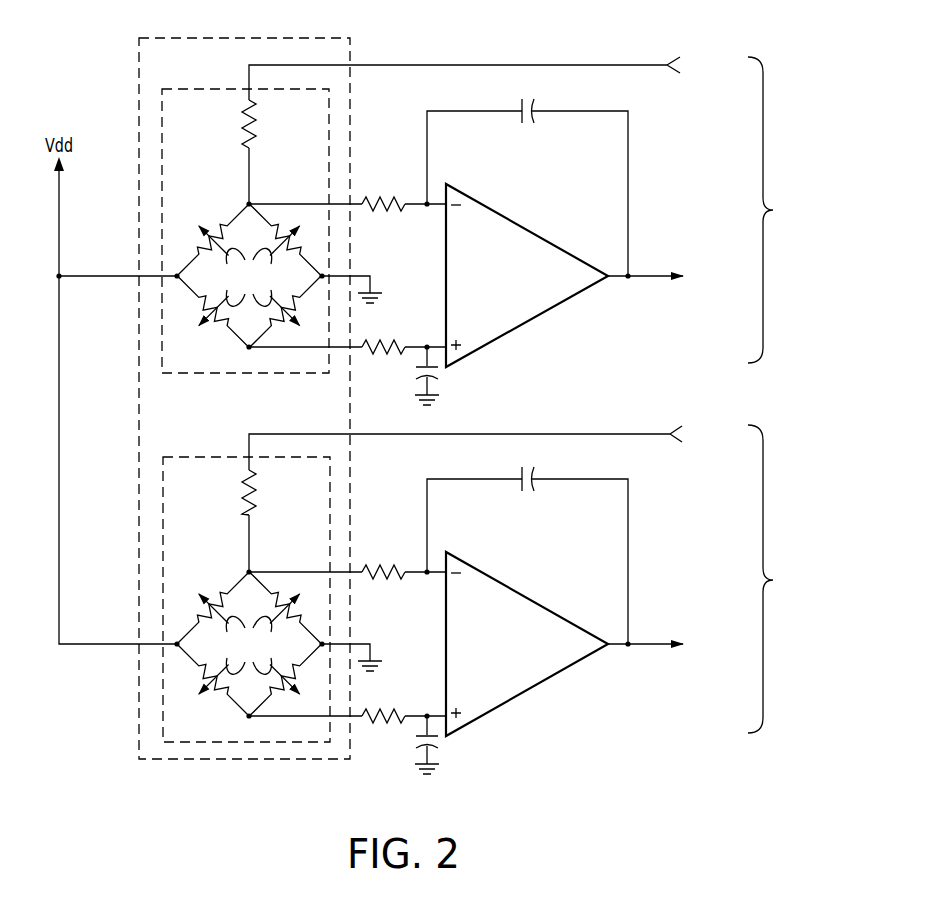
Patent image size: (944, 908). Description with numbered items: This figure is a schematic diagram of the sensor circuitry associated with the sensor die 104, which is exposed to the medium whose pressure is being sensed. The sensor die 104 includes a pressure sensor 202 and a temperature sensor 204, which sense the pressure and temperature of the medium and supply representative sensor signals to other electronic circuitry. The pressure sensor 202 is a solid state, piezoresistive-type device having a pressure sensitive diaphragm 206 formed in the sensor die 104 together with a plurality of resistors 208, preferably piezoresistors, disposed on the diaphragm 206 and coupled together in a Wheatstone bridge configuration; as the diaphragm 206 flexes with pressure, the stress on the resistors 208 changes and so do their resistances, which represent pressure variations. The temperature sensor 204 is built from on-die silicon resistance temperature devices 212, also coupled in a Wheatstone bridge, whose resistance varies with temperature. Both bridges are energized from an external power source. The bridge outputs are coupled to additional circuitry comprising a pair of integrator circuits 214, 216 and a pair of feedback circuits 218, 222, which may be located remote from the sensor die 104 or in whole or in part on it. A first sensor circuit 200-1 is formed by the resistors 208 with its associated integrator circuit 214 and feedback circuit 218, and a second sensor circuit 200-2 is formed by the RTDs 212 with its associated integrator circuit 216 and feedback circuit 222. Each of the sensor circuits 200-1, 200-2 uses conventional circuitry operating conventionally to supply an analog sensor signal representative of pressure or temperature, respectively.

The sensor die 104 is at (139, 38).
The pressure sensor 202 is at (186, 240).
The temperature sensor 204 is at (188, 679).
The pressure sensitive diaphragm 206 is at (230, 195).
The resistors 208 is at (249, 277).
The resistance temperature devices 212 is at (249, 645).
The integrator circuit 214 is at (642, 194).
The integrator circuit 216 is at (643, 552).
The feedback circuit 218 is at (452, 65).
The feedback circuit 222 is at (553, 434).
The first sensor circuit 200-1 is at (804, 210).
The second sensor circuit 200-2 is at (806, 579).